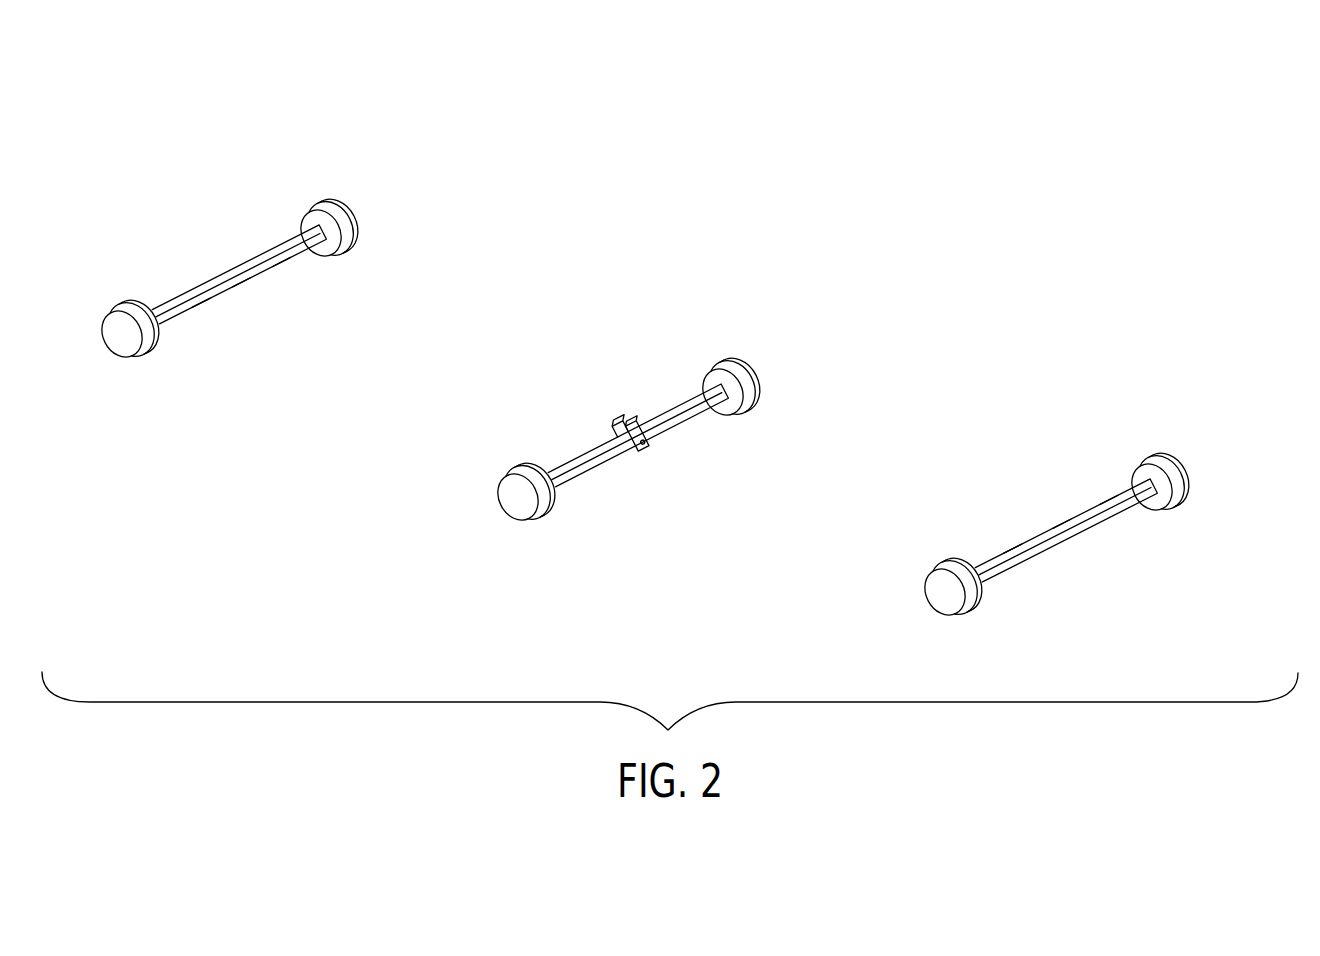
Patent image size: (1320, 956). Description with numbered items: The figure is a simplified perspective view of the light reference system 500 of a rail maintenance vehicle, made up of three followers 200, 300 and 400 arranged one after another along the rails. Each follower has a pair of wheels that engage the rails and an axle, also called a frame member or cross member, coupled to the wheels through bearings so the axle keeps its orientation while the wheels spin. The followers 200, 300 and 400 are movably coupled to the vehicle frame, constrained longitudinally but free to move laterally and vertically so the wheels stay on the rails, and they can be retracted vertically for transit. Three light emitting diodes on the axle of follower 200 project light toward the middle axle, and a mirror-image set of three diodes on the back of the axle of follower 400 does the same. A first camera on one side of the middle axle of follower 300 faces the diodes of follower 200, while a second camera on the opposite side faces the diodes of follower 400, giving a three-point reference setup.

The light reference system 500 is at (142, 172).
The follower 200 is at (384, 241).
The follower 300 is at (739, 459).
The follower 400 is at (1142, 554).